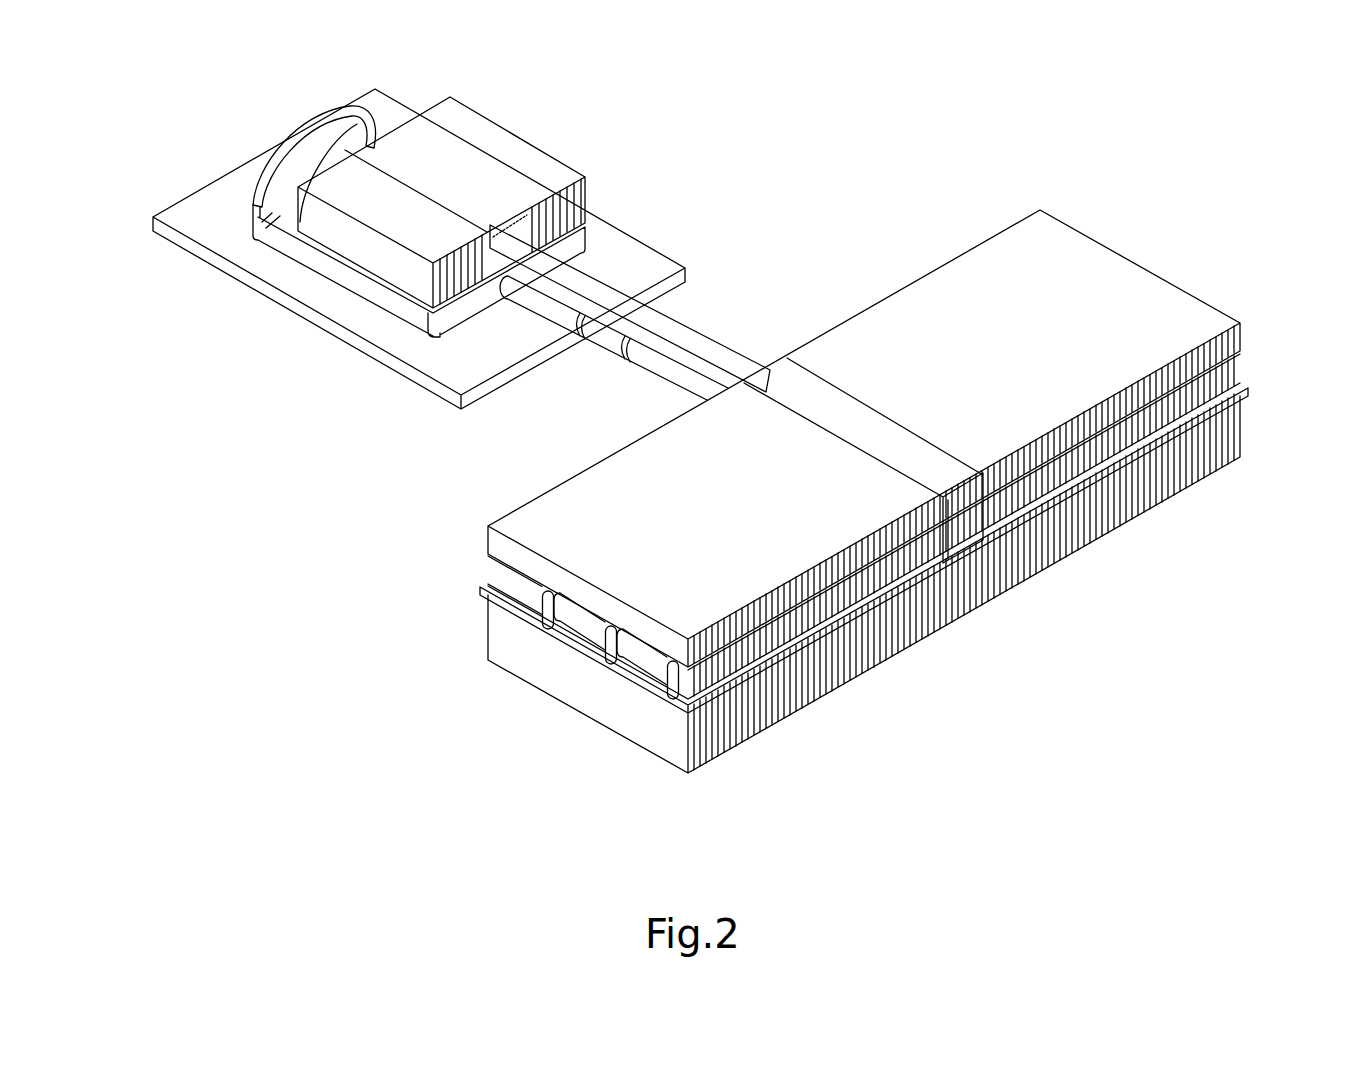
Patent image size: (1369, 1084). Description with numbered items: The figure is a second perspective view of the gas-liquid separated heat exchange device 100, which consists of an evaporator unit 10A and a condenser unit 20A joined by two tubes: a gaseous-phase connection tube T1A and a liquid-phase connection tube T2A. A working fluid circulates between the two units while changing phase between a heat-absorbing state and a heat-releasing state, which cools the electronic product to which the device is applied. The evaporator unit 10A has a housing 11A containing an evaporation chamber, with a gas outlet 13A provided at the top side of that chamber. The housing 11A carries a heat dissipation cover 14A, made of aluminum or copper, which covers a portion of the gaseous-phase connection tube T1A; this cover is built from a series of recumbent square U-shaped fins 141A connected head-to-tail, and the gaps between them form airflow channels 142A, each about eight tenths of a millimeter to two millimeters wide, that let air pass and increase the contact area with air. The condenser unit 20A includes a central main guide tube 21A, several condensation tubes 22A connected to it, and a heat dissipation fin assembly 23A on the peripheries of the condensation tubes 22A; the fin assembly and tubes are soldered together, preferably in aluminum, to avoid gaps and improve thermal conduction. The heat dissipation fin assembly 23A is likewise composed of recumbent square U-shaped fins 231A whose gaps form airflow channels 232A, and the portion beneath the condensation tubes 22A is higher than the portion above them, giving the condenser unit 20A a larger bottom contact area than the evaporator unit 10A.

The gas-liquid separated heat exchange device 100 is at (1232, 130).
The evaporator unit 10A is at (277, 302).
The housing 11A is at (267, 230).
The gas outlet 13A is at (350, 150).
The heat dissipation cover 14A is at (586, 173).
The recumbent square U-shaped fins 141A is at (583, 188).
The airflow channels 142A is at (577, 210).
The gaseous-phase connection tube T1A is at (673, 338).
The liquid-phase connection tube T2A is at (667, 372).
The condenser unit 20A is at (807, 489).
The central main guide tube 21A is at (947, 472).
The condensation tubes 22A is at (577, 628).
The heat dissipation fin assembly 23A is at (864, 507).
The recumbent square U-shaped fins 231A is at (703, 650).
The airflow channels 232A is at (667, 637).